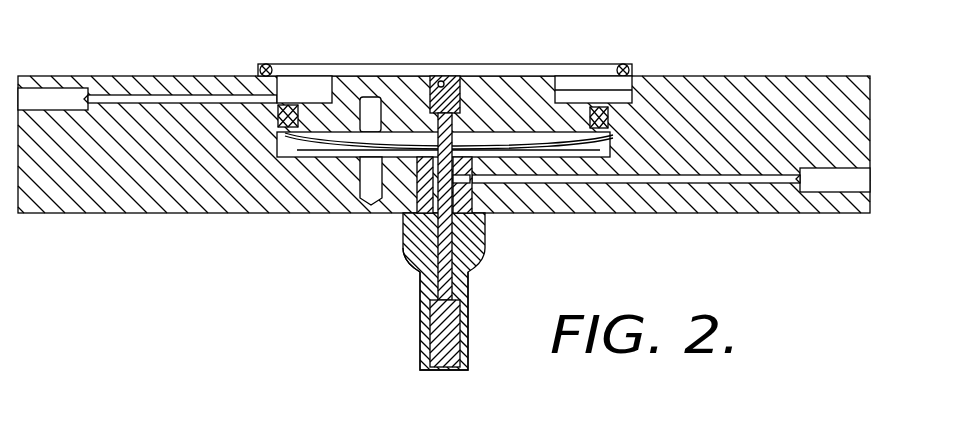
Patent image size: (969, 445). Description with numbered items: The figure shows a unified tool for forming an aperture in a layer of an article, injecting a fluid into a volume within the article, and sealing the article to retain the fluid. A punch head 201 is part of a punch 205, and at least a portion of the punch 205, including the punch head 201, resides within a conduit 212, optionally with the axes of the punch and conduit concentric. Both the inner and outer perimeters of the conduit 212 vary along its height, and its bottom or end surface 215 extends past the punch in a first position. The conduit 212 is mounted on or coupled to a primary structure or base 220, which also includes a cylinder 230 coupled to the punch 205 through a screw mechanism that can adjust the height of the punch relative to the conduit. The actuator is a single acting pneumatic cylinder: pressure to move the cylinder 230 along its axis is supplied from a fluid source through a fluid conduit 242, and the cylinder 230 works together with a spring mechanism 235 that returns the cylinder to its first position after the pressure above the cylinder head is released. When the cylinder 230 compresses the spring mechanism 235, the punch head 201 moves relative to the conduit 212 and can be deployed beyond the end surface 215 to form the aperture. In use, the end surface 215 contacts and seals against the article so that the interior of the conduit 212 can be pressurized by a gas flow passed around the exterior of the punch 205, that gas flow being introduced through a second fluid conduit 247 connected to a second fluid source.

The punch head 201 is at (447, 370).
The punch 205 is at (474, 263).
The conduit 212 is at (413, 268).
The end surface 215 is at (428, 372).
The base 220 is at (130, 213).
The cylinder 230 is at (400, 98).
The spring mechanism 235 is at (300, 140).
The fluid conduit 242 is at (150, 95).
The second fluid conduit 247 is at (708, 183).